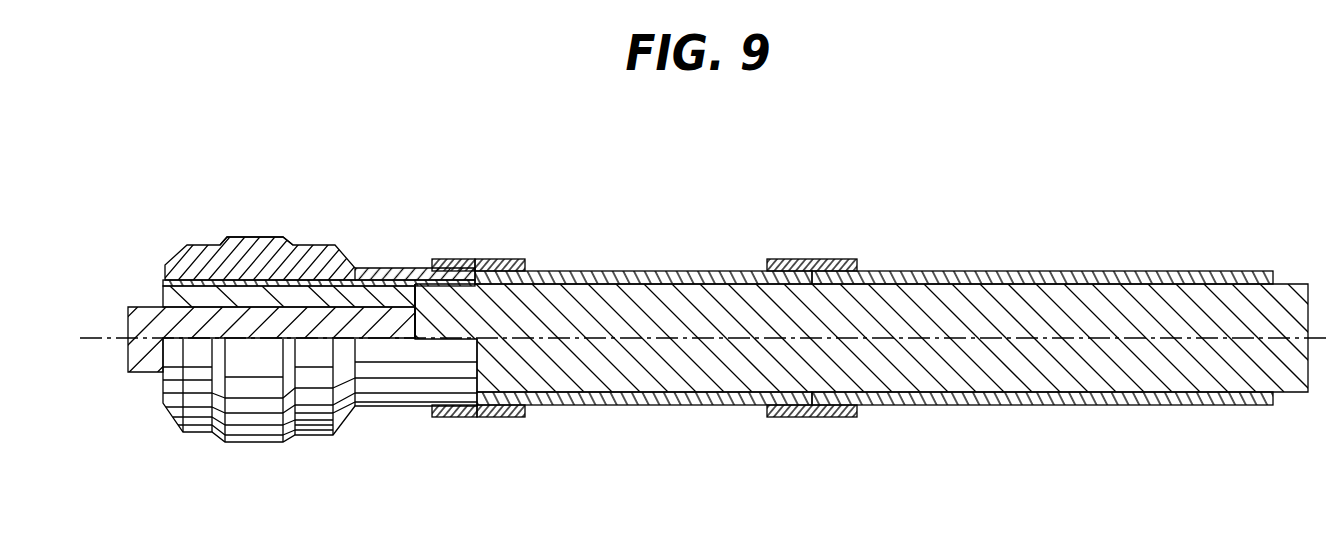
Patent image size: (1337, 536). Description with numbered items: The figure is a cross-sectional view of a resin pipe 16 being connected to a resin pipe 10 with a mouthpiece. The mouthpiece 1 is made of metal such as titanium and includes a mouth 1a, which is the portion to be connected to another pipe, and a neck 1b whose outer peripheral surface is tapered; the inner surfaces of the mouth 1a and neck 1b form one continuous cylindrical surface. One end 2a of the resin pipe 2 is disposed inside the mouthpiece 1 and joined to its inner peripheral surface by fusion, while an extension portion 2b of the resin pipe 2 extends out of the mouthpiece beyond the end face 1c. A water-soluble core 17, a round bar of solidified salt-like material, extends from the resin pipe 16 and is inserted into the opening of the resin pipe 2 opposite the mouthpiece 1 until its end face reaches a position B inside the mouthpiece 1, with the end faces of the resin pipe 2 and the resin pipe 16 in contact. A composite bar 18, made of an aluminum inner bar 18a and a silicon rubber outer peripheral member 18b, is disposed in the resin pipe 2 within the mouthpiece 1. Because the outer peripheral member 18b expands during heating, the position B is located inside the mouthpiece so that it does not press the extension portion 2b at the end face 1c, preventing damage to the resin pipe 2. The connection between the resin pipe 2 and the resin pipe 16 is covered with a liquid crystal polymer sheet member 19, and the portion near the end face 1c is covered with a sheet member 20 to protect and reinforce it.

The resin pipe with a mouthpiece 10 is at (578, 232).
The composite bar 18 is at (88, 207).
The inner bar 18a is at (143, 323).
The outer peripheral member 18b is at (177, 297).
The mouthpiece 1 is at (267, 235).
The mouth 1a is at (235, 255).
The neck 1b is at (400, 273).
The end face 1c is at (475, 262).
The resin pipe 2 is at (610, 275).
The one end of the resin pipe 2a is at (328, 284).
The extension portion of the resin pipe 2b is at (665, 275).
The resin pipe 16 is at (1020, 276).
The water-soluble core 17 is at (1293, 298).
The sheet member 19 is at (822, 265).
The sheet member 20 is at (500, 263).
The position of the end face of the water-soluble core B is at (414, 348).